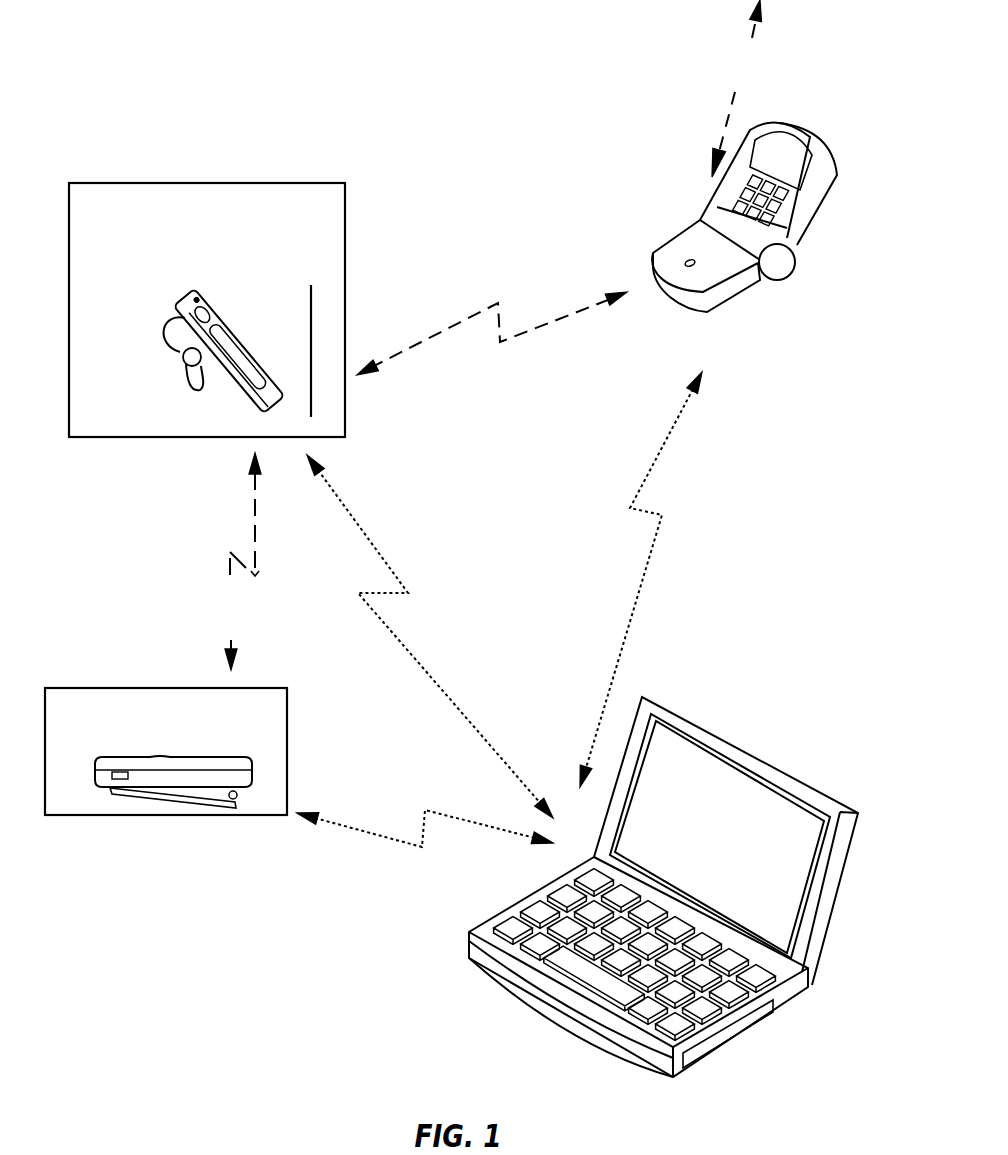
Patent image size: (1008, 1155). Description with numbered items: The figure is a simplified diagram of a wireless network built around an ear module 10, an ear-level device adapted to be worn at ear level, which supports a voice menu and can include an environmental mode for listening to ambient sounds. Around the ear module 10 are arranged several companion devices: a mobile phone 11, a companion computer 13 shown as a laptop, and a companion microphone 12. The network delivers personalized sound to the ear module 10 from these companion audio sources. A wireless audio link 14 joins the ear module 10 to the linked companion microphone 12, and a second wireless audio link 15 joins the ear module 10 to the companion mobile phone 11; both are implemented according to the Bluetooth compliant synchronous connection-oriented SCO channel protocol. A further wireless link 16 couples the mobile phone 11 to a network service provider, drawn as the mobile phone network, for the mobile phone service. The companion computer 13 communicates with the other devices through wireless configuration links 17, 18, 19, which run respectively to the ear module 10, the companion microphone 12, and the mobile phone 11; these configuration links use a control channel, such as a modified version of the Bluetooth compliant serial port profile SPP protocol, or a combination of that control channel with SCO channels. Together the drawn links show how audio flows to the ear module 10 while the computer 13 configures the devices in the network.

The ear module 10 is at (128, 182).
The mobile phone 11 is at (783, 255).
The companion microphone 12 is at (137, 816).
The companion computer 13 is at (747, 752).
The wireless audio link 14 is at (252, 520).
The wireless audio link 15 is at (525, 338).
The wireless link 16 is at (731, 121).
The wireless configuration link 17 is at (370, 533).
The wireless configuration link 18 is at (363, 832).
The wireless configuration link 19 is at (652, 467).